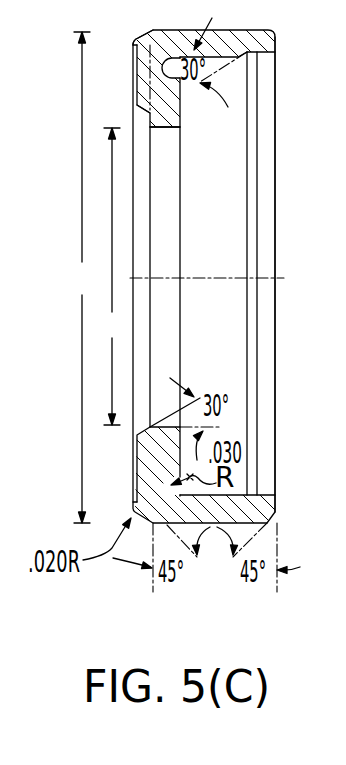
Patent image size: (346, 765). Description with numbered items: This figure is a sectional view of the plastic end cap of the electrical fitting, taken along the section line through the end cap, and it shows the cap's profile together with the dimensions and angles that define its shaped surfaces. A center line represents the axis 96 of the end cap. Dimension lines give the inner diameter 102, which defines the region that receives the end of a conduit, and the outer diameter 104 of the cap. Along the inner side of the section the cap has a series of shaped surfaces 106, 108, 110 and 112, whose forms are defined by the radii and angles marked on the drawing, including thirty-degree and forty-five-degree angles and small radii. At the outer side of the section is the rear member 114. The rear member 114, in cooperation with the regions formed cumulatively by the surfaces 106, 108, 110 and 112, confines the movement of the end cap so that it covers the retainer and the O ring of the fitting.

The axis 96 is at (264, 272).
The inner diameter 102 is at (112, 276).
The outer diameter 104 is at (70, 277).
The surface 106 is at (134, 41).
The surface 108 is at (138, 82).
The surface 110 is at (136, 108).
The surface 112 is at (138, 126).
The rear member 114 is at (266, 122).